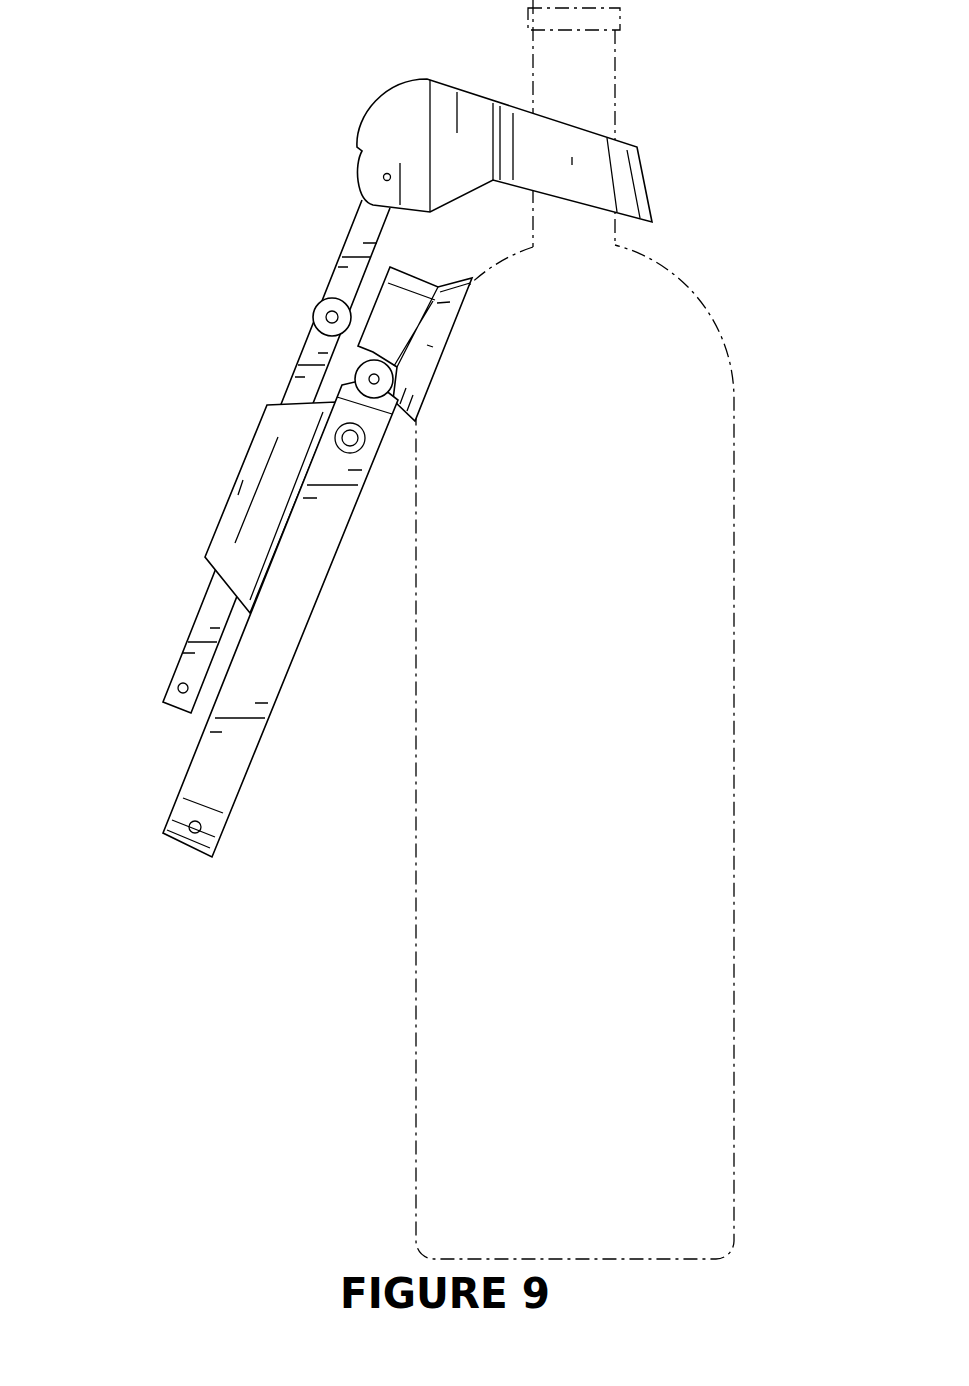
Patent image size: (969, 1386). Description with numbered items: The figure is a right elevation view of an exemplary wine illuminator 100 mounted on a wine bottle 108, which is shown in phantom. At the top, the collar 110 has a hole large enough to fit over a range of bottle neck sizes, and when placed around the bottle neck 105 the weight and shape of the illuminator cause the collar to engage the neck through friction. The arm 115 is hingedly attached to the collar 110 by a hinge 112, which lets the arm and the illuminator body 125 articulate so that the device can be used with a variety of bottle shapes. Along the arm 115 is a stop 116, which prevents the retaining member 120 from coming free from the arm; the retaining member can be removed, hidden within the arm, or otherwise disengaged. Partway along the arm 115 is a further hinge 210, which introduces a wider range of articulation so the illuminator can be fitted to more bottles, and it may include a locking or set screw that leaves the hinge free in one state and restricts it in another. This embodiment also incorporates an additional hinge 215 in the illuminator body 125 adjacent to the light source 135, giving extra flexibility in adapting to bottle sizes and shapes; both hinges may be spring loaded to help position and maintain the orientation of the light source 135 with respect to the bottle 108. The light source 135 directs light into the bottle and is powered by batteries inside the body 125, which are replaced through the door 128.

The wine illuminator 100 is at (137, 193).
The bottle neck 105 is at (552, 85).
The bottle 108 is at (697, 527).
The collar 110 is at (378, 112).
The hinge 112 is at (377, 168).
The arm 115 is at (188, 625).
The stop 116 is at (177, 680).
The retaining member 120 is at (222, 490).
The illuminator body 125 is at (183, 758).
The door 128 is at (170, 793).
The light source 135 is at (443, 360).
The hinge 210 is at (325, 297).
The hinge 215 is at (357, 357).